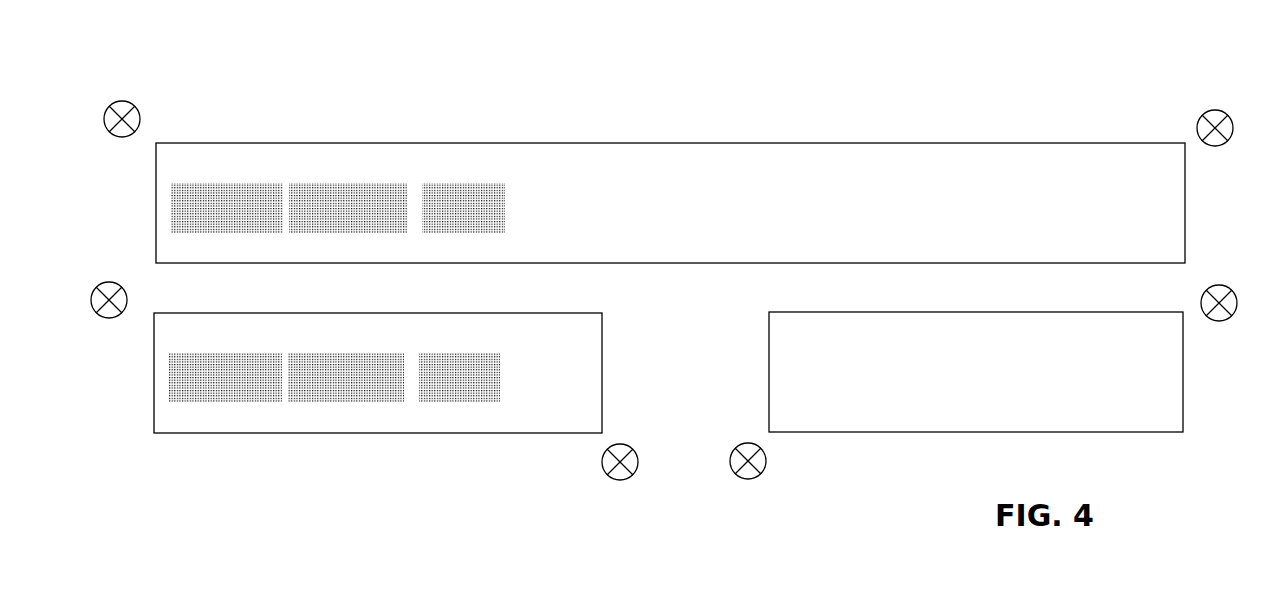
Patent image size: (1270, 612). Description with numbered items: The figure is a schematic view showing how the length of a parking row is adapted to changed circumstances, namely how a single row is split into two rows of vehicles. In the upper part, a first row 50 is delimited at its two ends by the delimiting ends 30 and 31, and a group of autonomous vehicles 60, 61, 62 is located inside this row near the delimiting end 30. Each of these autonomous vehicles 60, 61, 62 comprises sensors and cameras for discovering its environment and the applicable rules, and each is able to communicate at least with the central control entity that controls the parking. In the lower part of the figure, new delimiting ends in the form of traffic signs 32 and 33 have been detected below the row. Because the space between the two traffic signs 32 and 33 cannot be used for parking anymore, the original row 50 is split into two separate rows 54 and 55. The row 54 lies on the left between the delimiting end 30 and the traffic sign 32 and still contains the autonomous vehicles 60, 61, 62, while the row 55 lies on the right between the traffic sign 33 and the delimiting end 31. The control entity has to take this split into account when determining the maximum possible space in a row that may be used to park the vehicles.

The delimiting end 30 is at (115, 92).
The delimiting end 31 is at (1208, 102).
The traffic sign 32 is at (614, 481).
The traffic sign 33 is at (744, 490).
The row 50 is at (1052, 142).
The row 54 is at (598, 326).
The row 55 is at (1018, 331).
The autonomous vehicle 60 is at (208, 183).
The autonomous vehicle 61 is at (367, 183).
The autonomous vehicle 62 is at (494, 183).